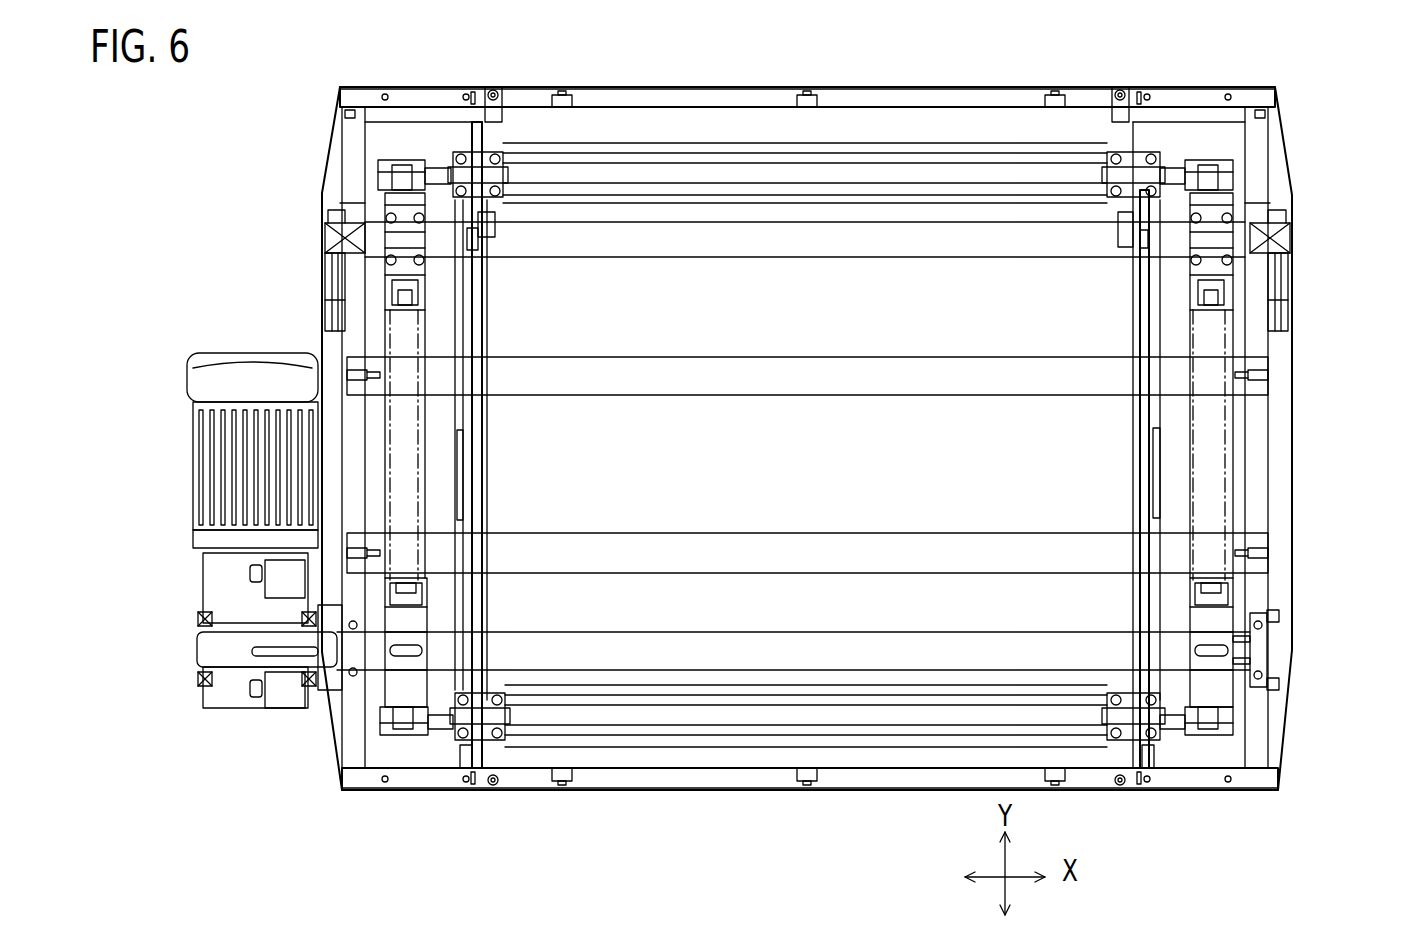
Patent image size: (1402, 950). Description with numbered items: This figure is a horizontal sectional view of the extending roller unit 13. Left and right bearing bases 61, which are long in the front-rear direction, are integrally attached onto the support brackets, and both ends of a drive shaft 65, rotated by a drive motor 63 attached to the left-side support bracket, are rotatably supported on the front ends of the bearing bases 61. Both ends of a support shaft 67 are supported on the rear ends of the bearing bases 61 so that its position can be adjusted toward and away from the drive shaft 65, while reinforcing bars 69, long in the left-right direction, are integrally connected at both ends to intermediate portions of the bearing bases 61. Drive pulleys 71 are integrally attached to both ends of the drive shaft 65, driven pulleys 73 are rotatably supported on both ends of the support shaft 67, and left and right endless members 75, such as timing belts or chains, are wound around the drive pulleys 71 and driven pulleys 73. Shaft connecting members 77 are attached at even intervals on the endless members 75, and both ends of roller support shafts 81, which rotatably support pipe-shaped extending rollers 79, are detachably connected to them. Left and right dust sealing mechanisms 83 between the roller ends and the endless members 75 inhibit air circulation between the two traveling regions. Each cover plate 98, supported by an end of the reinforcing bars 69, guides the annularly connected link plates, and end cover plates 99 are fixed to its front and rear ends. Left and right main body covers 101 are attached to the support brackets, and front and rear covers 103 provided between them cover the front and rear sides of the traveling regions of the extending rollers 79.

The extending roller unit 13 is at (1098, 78).
The bearing base 61 is at (355, 458).
The drive motor 63 is at (203, 508).
The drive shaft 65 is at (938, 648).
The support shaft 67 is at (845, 255).
The reinforcing bar 69 is at (866, 393).
The drive pulley 71 is at (413, 620).
The driven pulley 73 is at (420, 270).
The endless member 75 is at (420, 338).
The shaft connecting member 77 is at (402, 160).
The extending roller 79 is at (872, 150).
The roller support shaft 81 is at (952, 175).
The dust sealing mechanism 83 is at (465, 752).
The cover plate 98 is at (480, 505).
The end cover plate 99 is at (482, 305).
The main body cover 101 is at (328, 140).
The front and rear cover 103 is at (703, 100).